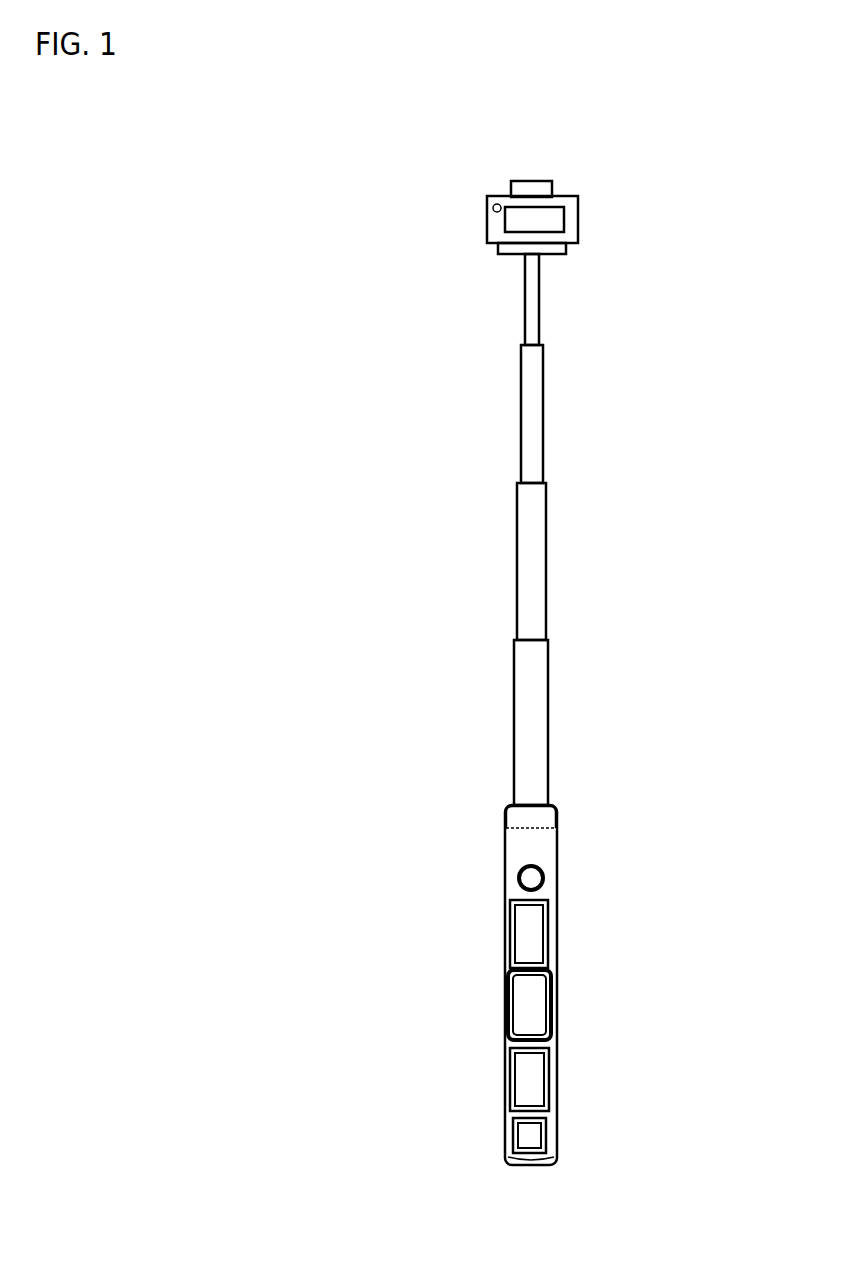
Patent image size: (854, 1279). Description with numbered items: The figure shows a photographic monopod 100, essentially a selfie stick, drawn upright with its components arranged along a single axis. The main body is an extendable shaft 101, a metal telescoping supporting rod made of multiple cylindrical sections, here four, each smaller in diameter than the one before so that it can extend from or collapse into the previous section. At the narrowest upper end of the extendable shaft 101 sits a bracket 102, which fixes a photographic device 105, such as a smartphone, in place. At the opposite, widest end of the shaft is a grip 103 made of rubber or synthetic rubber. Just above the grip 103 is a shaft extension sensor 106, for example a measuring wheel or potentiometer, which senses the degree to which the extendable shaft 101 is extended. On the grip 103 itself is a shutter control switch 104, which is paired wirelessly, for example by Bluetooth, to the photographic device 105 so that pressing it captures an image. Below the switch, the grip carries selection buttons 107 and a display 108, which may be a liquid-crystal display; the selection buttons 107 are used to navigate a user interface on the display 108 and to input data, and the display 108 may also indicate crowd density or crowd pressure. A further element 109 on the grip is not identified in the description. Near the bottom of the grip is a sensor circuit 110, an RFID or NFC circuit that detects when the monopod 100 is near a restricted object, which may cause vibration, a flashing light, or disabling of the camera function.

The photographic monopod 100 is at (184, 155).
The extendable shaft 101 is at (510, 263).
The bracket 102 is at (562, 183).
The grip 103 is at (560, 958).
The shutter control switch 104 is at (557, 878).
The photographic device 105 is at (581, 222).
The shaft extension sensor 106 is at (561, 817).
The selection buttons 107 is at (506, 930).
The display 108 is at (506, 1010).
The third button 109 is at (506, 1087).
The sensor circuit 110 is at (556, 1133).